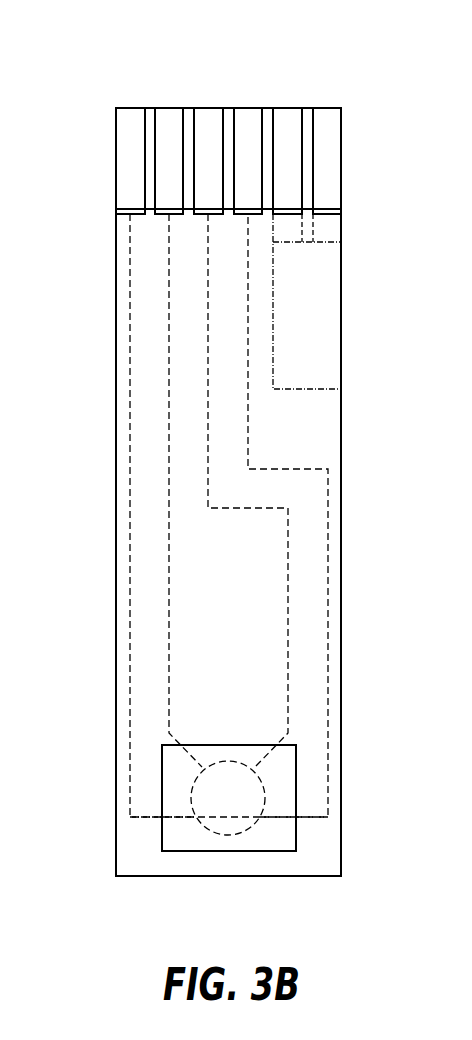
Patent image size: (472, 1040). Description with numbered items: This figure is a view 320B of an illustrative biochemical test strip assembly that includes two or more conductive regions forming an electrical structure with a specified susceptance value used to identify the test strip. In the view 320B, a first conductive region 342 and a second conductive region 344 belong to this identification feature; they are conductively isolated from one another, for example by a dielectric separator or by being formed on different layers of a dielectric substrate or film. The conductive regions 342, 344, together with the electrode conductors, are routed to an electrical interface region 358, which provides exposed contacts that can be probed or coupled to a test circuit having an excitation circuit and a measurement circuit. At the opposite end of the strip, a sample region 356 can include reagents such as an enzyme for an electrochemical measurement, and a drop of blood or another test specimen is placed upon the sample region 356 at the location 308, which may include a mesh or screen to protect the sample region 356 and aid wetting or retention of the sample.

The view of biochemical test strip assembly 320B is at (330, 57).
The electrical interface region 358 is at (100, 109).
The first conductive region 342 is at (328, 311).
The second conductive region 344 is at (328, 230).
The location 308 is at (192, 835).
The sample region 356 is at (237, 808).